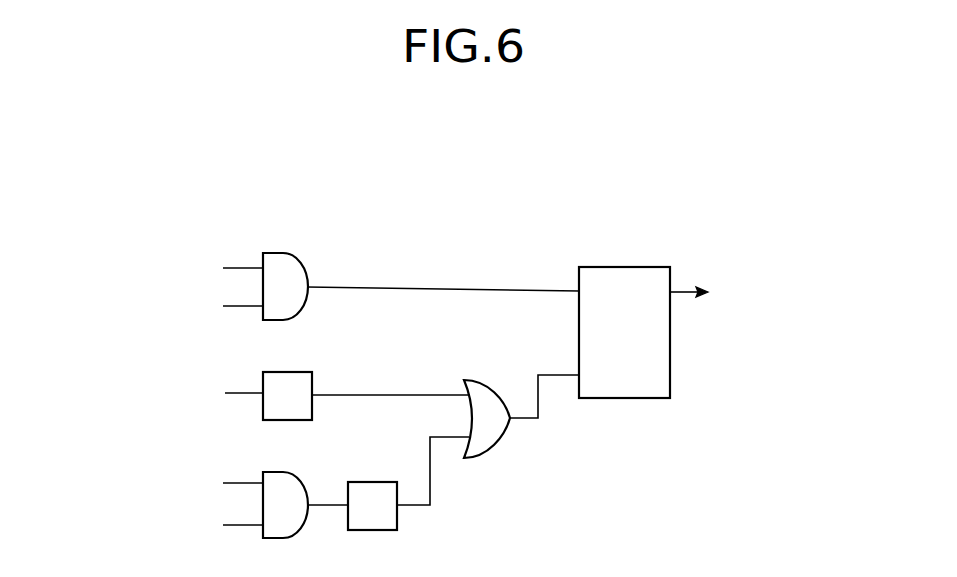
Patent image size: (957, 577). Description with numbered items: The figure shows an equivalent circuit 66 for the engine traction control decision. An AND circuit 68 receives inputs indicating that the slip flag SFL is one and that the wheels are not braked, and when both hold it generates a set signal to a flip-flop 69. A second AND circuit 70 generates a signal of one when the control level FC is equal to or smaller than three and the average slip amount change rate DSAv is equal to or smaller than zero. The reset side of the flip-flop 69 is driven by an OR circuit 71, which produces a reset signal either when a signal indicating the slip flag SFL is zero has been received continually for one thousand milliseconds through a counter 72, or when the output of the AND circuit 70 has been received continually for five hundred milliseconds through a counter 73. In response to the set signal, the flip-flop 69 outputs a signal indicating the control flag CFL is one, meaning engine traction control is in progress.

The control fluid lock (CFL) signal generating logic circuit 66 is at (497, 232).
The AND circuit 68 is at (300, 263).
The flip-flop 69 is at (641, 266).
The AND circuit 70 is at (291, 473).
The OR circuit 71 is at (489, 382).
The counter 72 is at (312, 379).
The counter 73 is at (377, 482).